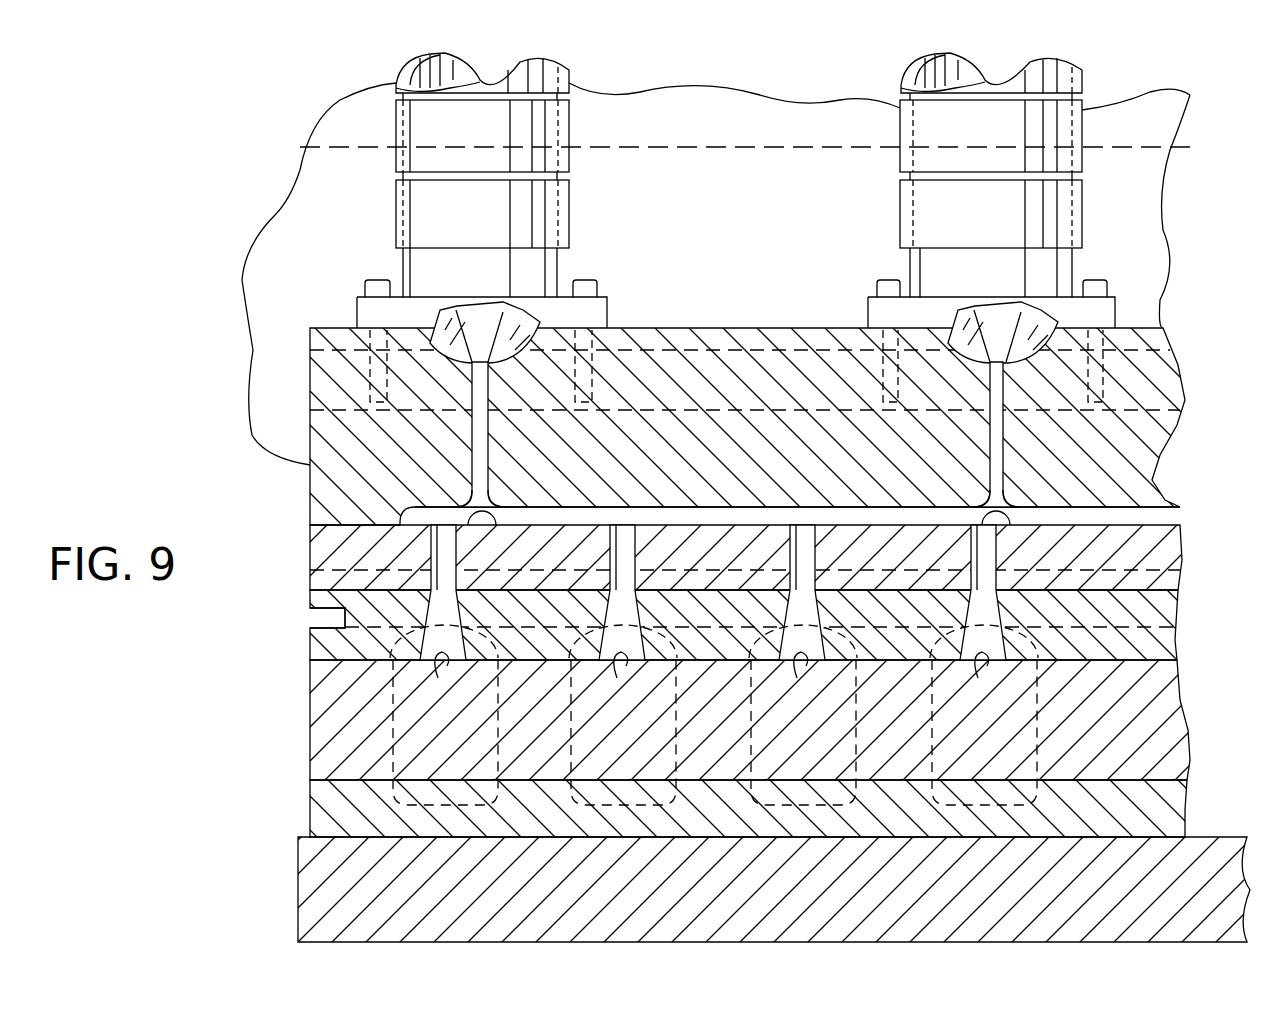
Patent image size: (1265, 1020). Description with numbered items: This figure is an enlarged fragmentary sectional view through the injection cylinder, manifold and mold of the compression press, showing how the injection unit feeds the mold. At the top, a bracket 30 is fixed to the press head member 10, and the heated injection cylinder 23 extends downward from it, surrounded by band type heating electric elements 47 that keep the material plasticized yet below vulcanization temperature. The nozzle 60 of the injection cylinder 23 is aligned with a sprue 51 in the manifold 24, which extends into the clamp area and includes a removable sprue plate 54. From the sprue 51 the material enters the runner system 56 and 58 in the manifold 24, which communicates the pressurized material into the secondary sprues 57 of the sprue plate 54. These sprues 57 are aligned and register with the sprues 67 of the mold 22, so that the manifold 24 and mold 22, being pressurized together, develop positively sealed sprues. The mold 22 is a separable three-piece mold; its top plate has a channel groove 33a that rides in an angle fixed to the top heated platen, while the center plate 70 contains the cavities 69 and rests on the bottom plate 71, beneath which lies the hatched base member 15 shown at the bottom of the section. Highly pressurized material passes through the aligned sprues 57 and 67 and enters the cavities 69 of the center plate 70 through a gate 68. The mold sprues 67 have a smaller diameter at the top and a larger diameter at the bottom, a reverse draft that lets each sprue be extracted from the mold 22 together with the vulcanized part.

The head member 10 is at (255, 300).
The base plate 15 is at (312, 893).
The mold 22 is at (328, 642).
The injection cylinder 23 is at (562, 270).
The manifold 24 is at (1165, 402).
The bracket 30 is at (757, 105).
The channel groove 33a is at (318, 618).
The band type heating electric elements 47 is at (570, 214).
The sprue 51 is at (483, 385).
The sprue plate 54 is at (318, 580).
The runner system 56 is at (462, 510).
The sprues of sprue plate 57 is at (438, 545).
The runner system 58 is at (1170, 522).
The nozzle 60 is at (432, 345).
The sprues of mold 67 is at (456, 610).
The gate 68 is at (711, 679).
The cavities 69 is at (487, 731).
The center plate 70 is at (318, 735).
The bottom plate 71 is at (318, 818).